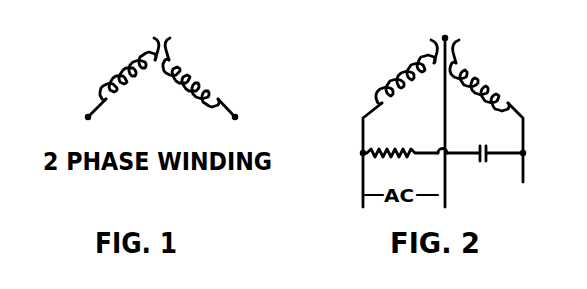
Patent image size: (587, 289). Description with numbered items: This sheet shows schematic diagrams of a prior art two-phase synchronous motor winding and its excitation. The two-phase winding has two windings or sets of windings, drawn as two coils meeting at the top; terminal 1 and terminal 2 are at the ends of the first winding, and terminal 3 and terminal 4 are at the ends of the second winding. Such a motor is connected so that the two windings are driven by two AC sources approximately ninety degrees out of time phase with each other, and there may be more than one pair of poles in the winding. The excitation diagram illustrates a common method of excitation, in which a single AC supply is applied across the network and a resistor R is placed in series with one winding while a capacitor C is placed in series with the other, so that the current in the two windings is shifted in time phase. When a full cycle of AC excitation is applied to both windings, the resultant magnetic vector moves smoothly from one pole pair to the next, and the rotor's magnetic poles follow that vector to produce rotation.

In FIG. 1, the first winding terminal 1 is at (88, 108).
In FIG. 2, the first winding terminal 1 is at (364, 155).
In FIG. 1, the second winding terminal 2 is at (129, 61).
In FIG. 2, the second winding terminal 2 is at (406, 65).
In FIG. 1, the third winding terminal 3 is at (191, 64).
In FIG. 2, the third winding terminal 3 is at (479, 67).
In FIG. 1, the fourth winding terminal 4 is at (236, 110).
In FIG. 2, the fourth winding terminal 4 is at (528, 142).
In FIG. 2, the resistor R is at (400, 140).
In FIG. 2, the capacitor C is at (485, 141).